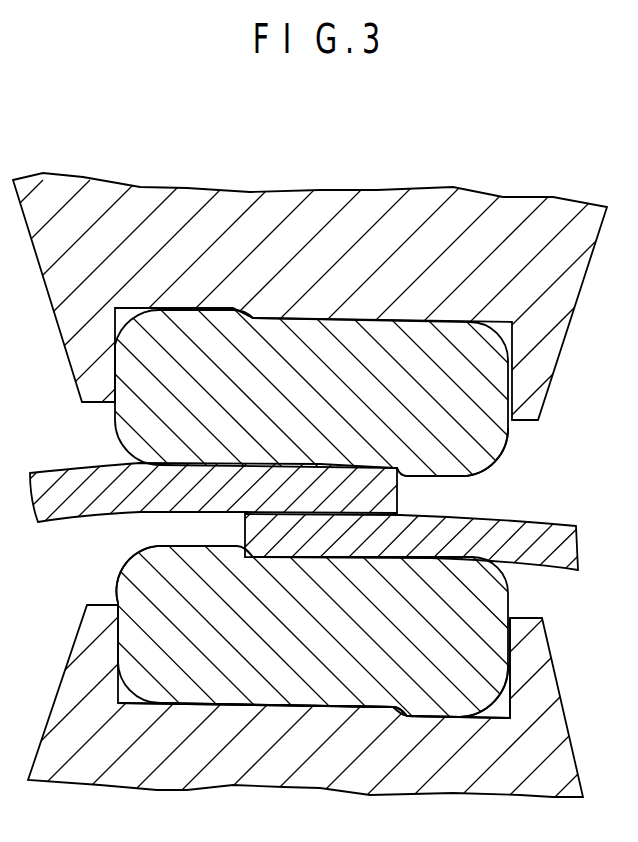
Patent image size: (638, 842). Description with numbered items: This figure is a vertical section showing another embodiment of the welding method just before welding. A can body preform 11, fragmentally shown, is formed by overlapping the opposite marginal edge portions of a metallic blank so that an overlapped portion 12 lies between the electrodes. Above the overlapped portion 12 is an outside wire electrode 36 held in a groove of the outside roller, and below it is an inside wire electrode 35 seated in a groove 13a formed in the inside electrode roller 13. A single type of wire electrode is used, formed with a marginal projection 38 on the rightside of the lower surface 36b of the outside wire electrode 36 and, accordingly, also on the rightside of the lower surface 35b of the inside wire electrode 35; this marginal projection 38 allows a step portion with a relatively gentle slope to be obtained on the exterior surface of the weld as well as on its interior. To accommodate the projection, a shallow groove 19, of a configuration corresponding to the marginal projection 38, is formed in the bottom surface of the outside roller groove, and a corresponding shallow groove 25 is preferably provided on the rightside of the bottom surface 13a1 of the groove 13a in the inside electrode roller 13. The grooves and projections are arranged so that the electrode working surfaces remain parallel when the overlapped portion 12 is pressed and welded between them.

The can body preform 11 is at (310, 530).
The overlapped portion 12 is at (336, 540).
The inside electrode roller 13 is at (548, 678).
The groove 13a is at (495, 707).
The bottom surface 13a1 is at (359, 708).
The shallow groove 19 is at (181, 309).
The shallow groove 25 is at (427, 717).
The inside wire electrode 35 is at (160, 629).
The lower surface 35b is at (322, 707).
The outside wire electrode 36 is at (137, 430).
The lower surface 36b is at (352, 468).
The marginal projection 38 is at (474, 463).